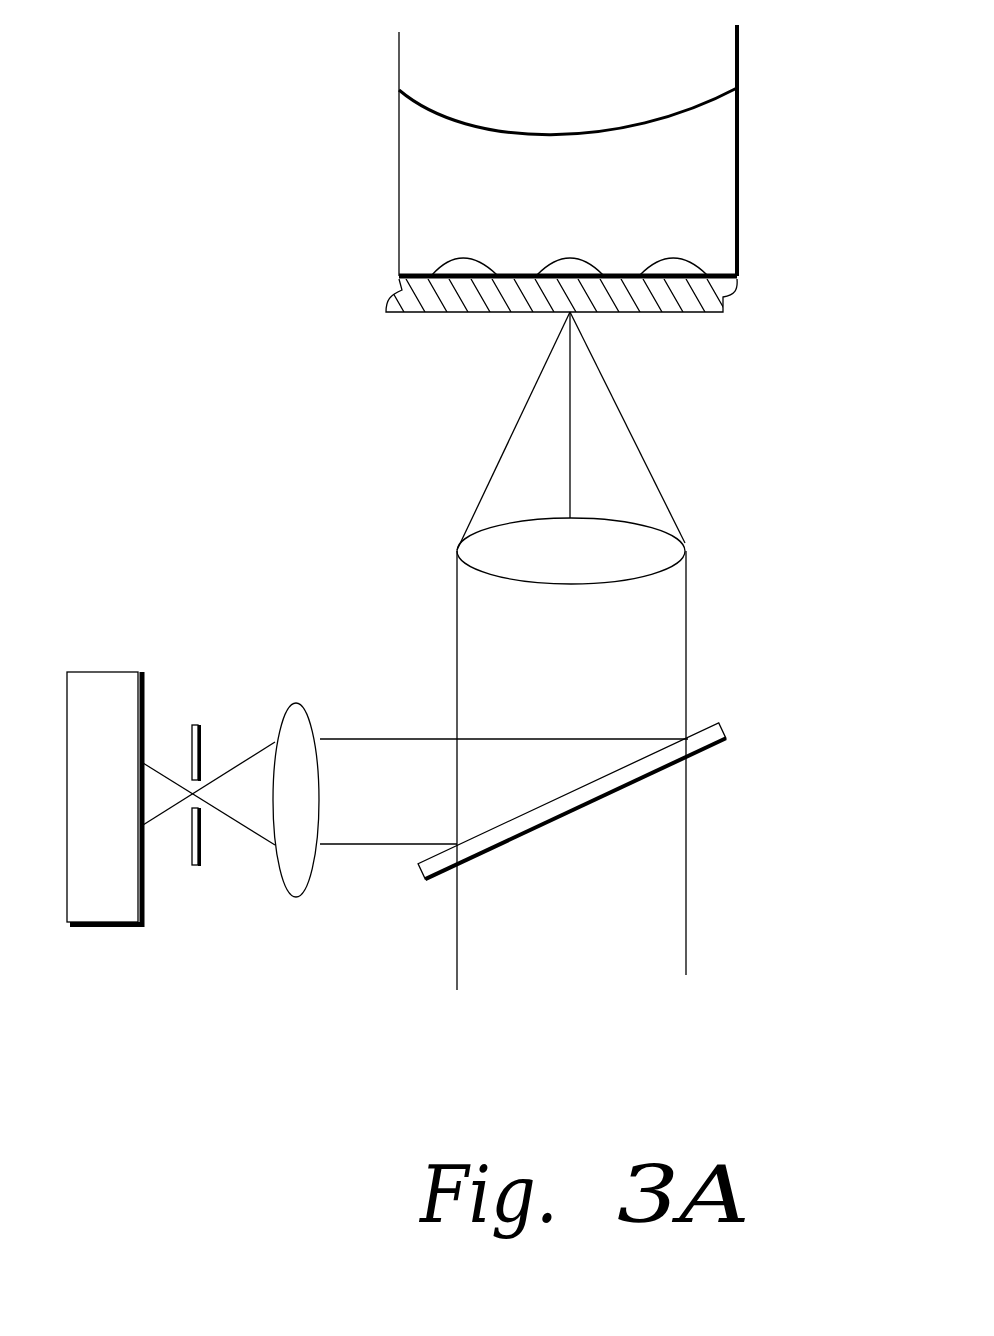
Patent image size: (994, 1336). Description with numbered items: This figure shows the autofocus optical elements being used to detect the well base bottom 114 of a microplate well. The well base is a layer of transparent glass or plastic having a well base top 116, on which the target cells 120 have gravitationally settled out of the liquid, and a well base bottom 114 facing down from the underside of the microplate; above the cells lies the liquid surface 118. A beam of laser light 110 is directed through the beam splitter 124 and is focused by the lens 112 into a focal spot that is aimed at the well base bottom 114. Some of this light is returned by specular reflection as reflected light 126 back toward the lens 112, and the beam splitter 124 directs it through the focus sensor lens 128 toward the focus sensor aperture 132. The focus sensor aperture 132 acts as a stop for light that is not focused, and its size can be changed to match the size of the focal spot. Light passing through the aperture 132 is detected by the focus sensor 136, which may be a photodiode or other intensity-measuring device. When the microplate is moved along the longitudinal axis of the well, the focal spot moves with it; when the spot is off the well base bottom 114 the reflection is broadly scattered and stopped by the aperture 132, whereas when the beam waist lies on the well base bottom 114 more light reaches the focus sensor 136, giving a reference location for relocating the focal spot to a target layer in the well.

The beam of laser light 110 is at (648, 878).
The lens 112 is at (653, 548).
The well base bottom 114 is at (440, 315).
The well base top 116 is at (515, 268).
The liquid surface 118 is at (630, 123).
The target cells 120 is at (683, 263).
The beam splitter 124 is at (723, 733).
The reflected light 126 is at (365, 817).
The focus sensor lens 128 is at (297, 705).
The focus sensor aperture 132 is at (197, 723).
The focus sensor 136 is at (133, 668).